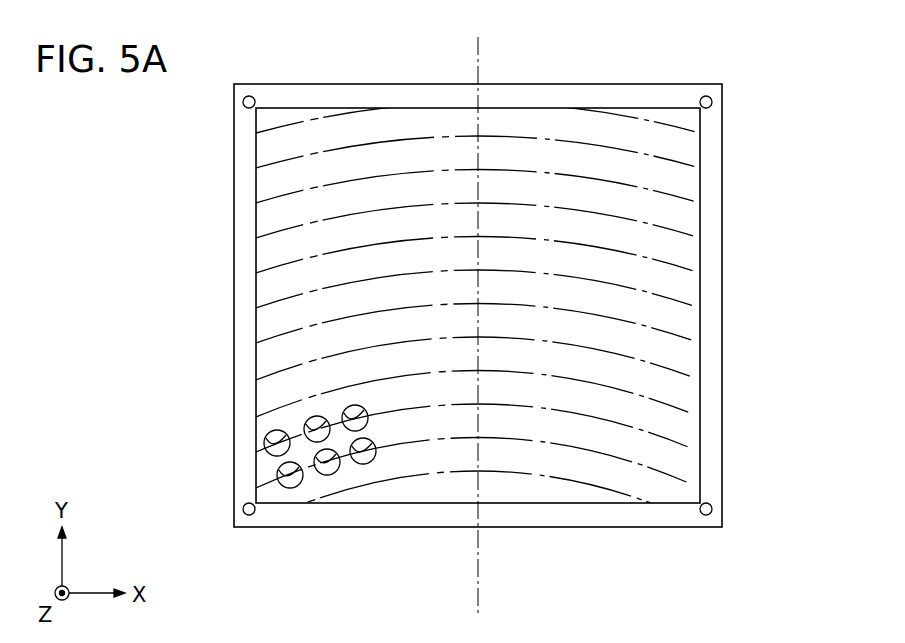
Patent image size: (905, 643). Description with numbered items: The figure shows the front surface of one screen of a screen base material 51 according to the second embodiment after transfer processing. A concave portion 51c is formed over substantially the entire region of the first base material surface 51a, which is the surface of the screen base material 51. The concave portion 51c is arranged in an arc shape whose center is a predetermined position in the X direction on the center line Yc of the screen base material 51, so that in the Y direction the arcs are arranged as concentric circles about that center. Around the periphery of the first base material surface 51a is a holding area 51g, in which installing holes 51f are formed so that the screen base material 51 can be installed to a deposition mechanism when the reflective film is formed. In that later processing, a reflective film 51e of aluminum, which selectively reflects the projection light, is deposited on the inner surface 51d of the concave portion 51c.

The screen base material 51 is at (572, 95).
The first base material surface 51a is at (690, 252).
The concave portion 51c is at (283, 486).
The inner surface 51d is at (241, 454).
The reflective film 51e is at (267, 436).
The installing hole 51f is at (243, 102).
The holding area 51g is at (713, 295).